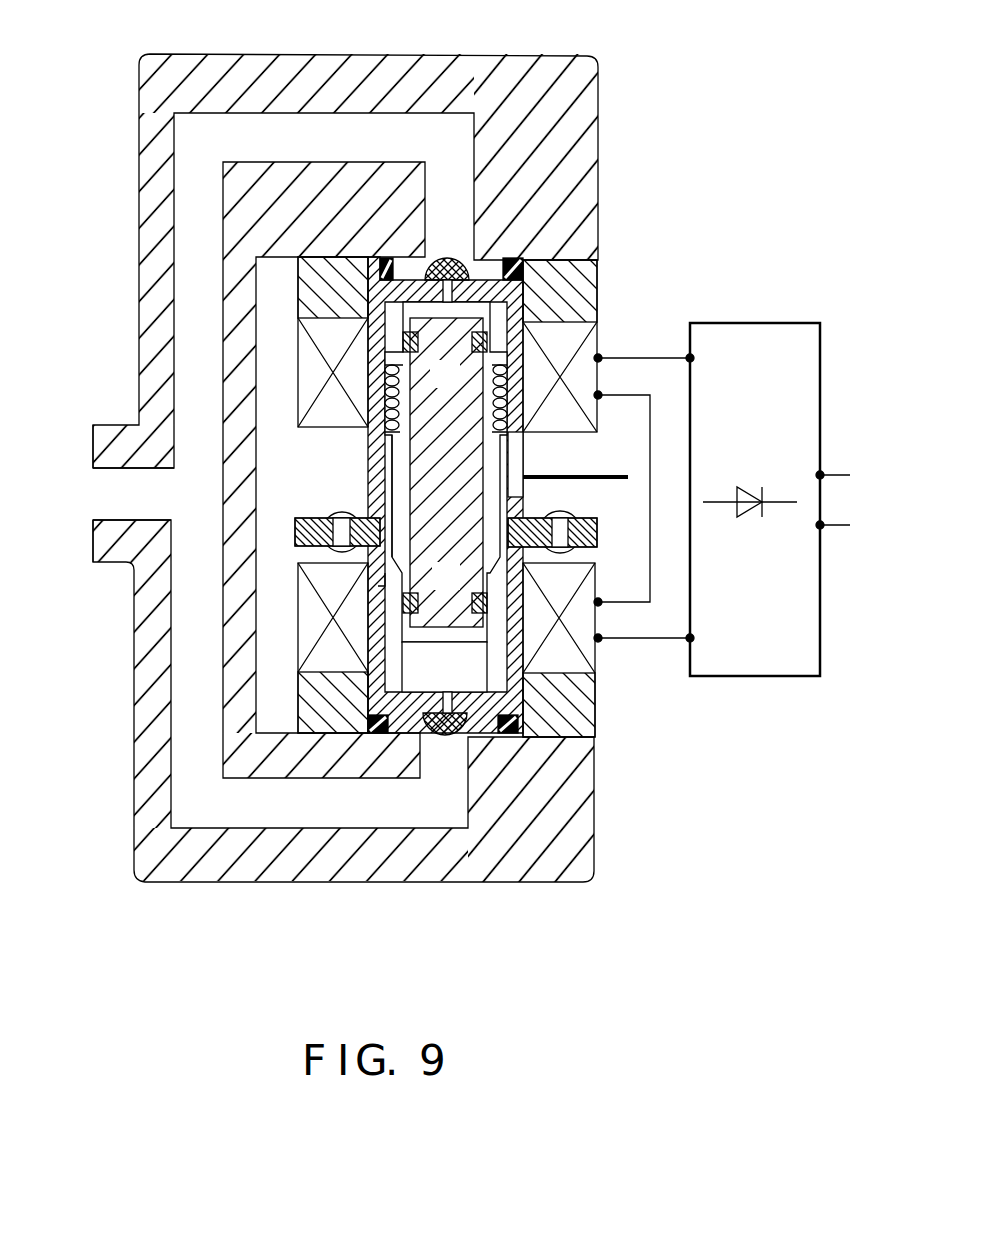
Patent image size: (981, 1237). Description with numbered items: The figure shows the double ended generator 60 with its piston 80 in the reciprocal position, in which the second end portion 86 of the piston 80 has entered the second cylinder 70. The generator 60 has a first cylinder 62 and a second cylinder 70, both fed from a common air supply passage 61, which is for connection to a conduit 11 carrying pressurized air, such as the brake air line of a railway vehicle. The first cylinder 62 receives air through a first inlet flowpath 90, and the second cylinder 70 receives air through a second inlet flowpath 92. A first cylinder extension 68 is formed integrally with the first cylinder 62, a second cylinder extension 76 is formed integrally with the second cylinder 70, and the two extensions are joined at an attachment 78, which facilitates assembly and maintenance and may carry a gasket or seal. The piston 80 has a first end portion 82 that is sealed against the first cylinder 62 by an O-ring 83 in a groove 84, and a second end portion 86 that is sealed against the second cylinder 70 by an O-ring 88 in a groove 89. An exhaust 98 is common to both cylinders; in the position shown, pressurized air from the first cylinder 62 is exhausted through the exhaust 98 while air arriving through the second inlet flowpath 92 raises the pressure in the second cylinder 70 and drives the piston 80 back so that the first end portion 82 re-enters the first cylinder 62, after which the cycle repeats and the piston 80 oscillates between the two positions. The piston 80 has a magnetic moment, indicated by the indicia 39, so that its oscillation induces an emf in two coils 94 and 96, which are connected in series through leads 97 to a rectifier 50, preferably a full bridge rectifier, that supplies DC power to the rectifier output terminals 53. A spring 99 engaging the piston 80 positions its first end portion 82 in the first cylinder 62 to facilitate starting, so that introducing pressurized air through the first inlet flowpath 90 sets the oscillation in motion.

The conduit 11 is at (100, 493).
The indicia 39 is at (442, 393).
The rectifier 50 is at (772, 320).
The rectifier output terminals 53 is at (850, 497).
The generator 60 is at (668, 105).
The air supply passage 61 is at (458, 137).
The first cylinder 62 is at (455, 740).
The first cylinder extension 68 is at (378, 586).
The second cylinder 70 is at (500, 316).
The second cylinder extension 76 is at (447, 560).
The attachment 78 is at (280, 535).
The piston 80 is at (461, 479).
The first end portion 82 is at (285, 507).
The O-ring 83 is at (390, 613).
The groove 84 is at (583, 670).
The second end portion 86 is at (410, 343).
The O-ring 88 is at (475, 345).
The groove 89 is at (530, 345).
The first inlet flowpath 90 is at (495, 737).
The second inlet flowpath 92 is at (455, 249).
The coil 94 is at (305, 611).
The coil 96 is at (322, 320).
The leads 97 is at (648, 358).
The exhaust 98 is at (620, 481).
The spring 99 is at (388, 437).